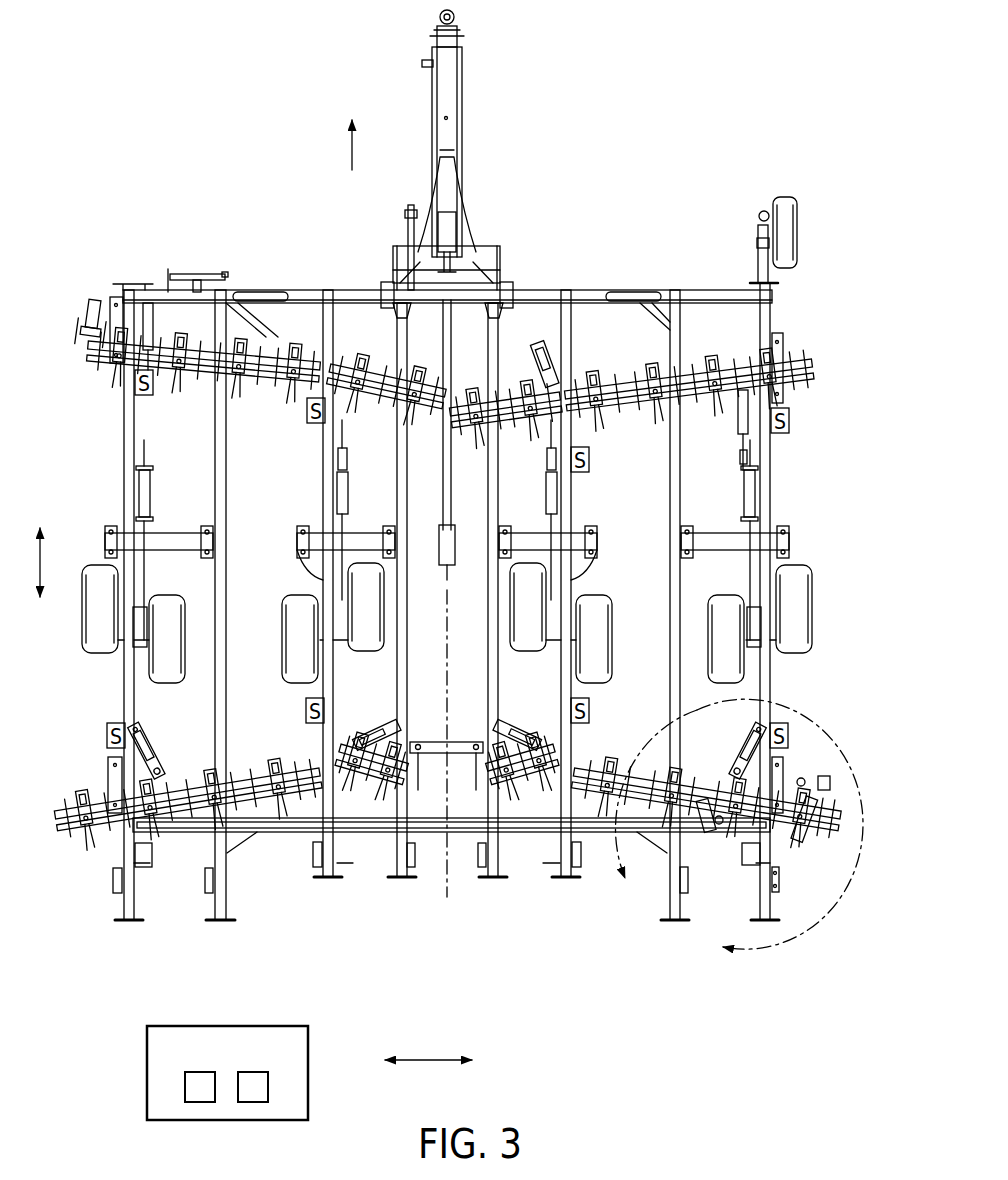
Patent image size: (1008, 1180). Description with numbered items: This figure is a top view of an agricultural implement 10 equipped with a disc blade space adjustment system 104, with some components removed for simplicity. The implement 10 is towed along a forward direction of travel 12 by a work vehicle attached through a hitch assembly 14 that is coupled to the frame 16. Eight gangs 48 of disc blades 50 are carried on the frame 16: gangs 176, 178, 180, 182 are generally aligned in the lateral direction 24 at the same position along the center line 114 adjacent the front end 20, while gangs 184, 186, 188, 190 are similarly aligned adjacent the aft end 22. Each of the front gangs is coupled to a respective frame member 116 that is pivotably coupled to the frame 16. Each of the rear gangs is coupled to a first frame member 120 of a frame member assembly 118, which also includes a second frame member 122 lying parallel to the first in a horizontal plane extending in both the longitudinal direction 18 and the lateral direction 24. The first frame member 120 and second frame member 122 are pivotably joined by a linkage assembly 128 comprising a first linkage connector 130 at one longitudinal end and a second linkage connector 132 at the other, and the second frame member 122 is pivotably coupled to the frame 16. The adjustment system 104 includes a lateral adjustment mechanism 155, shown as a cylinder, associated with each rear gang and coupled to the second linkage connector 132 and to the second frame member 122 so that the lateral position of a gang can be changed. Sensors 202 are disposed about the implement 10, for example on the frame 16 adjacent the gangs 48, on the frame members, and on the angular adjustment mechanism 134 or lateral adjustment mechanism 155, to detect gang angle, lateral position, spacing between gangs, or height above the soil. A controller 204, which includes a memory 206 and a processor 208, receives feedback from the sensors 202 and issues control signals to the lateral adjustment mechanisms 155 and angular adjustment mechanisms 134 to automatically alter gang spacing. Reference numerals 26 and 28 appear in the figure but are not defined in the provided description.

The agricultural implement 10 is at (237, 198).
The forward direction of travel 12 is at (350, 150).
The hitch assembly 14 is at (463, 122).
The frame 16 is at (629, 286).
The longitudinal direction 18 is at (55, 555).
The front end 20 is at (597, 266).
The aft end 22 is at (294, 919).
The lateral direction 24 is at (430, 1060).
The wheel assembly cross beam 26 is at (105, 528).
The frame wing post 28 is at (797, 488).
The gangs 48 is at (178, 376).
The disc blades 50 is at (253, 376).
The disc blade space adjustment system 104 is at (707, 763).
The center line 114 is at (445, 672).
The frame members 116 is at (805, 361).
The frame member assembly 118 is at (801, 777).
The first frame member 120 is at (772, 878).
The second frame member 122 is at (828, 782).
The linkage assembly 128 is at (675, 712).
The first linkage connector 130 is at (817, 822).
The second linkage connector 132 is at (702, 816).
The angular adjustment mechanism 134 is at (743, 730).
The lateral adjustment mechanism 155 is at (719, 824).
The gang 176 is at (113, 378).
The gang 178 is at (352, 415).
The gang 180 is at (516, 446).
The gang 182 is at (702, 409).
The gang 184 is at (168, 768).
The gang 186 is at (293, 753).
The gang 188 is at (613, 753).
The gang 190 is at (803, 771).
The sensors 202 is at (142, 396).
The controller 204 is at (228, 1026).
The memory 206 is at (200, 1102).
The processor 208 is at (253, 1102).